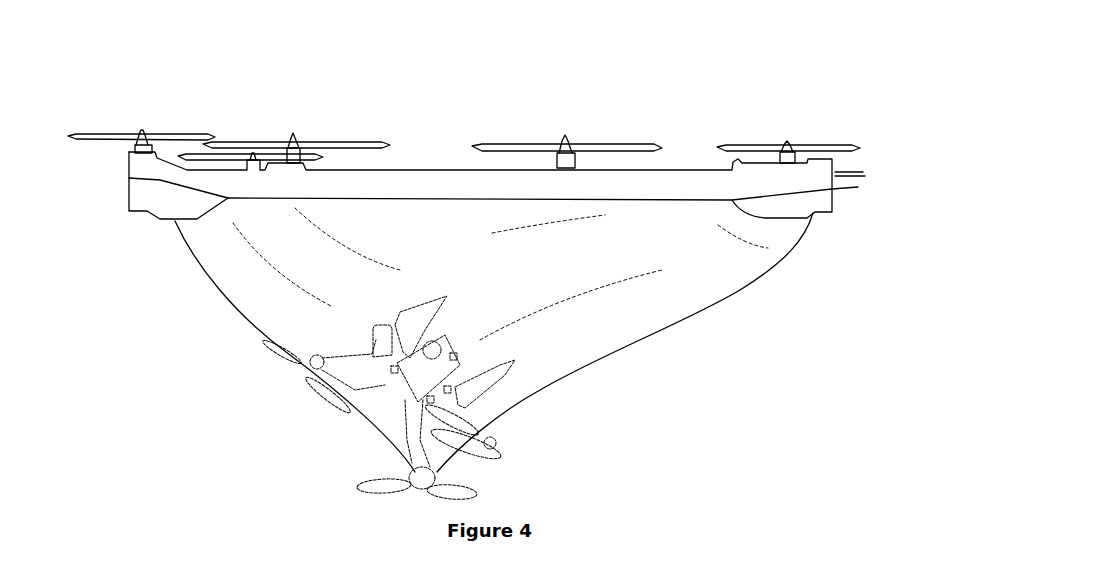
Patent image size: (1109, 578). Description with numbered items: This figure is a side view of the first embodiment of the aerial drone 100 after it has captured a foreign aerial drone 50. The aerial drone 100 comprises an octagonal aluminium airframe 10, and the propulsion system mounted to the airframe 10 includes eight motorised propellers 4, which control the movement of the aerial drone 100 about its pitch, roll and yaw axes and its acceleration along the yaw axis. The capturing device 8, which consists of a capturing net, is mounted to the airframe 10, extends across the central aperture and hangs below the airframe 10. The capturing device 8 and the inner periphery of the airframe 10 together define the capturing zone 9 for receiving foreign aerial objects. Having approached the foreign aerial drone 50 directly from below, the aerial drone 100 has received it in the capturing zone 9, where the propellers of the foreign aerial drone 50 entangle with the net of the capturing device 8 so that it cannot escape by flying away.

The aerial drone 100 is at (527, 279).
The airframe 10 is at (432, 183).
The motorised propellers 4 is at (320, 142).
The capturing device 8 is at (662, 327).
The capturing zone 9 is at (472, 268).
The foreign aerial drone 50 is at (457, 417).